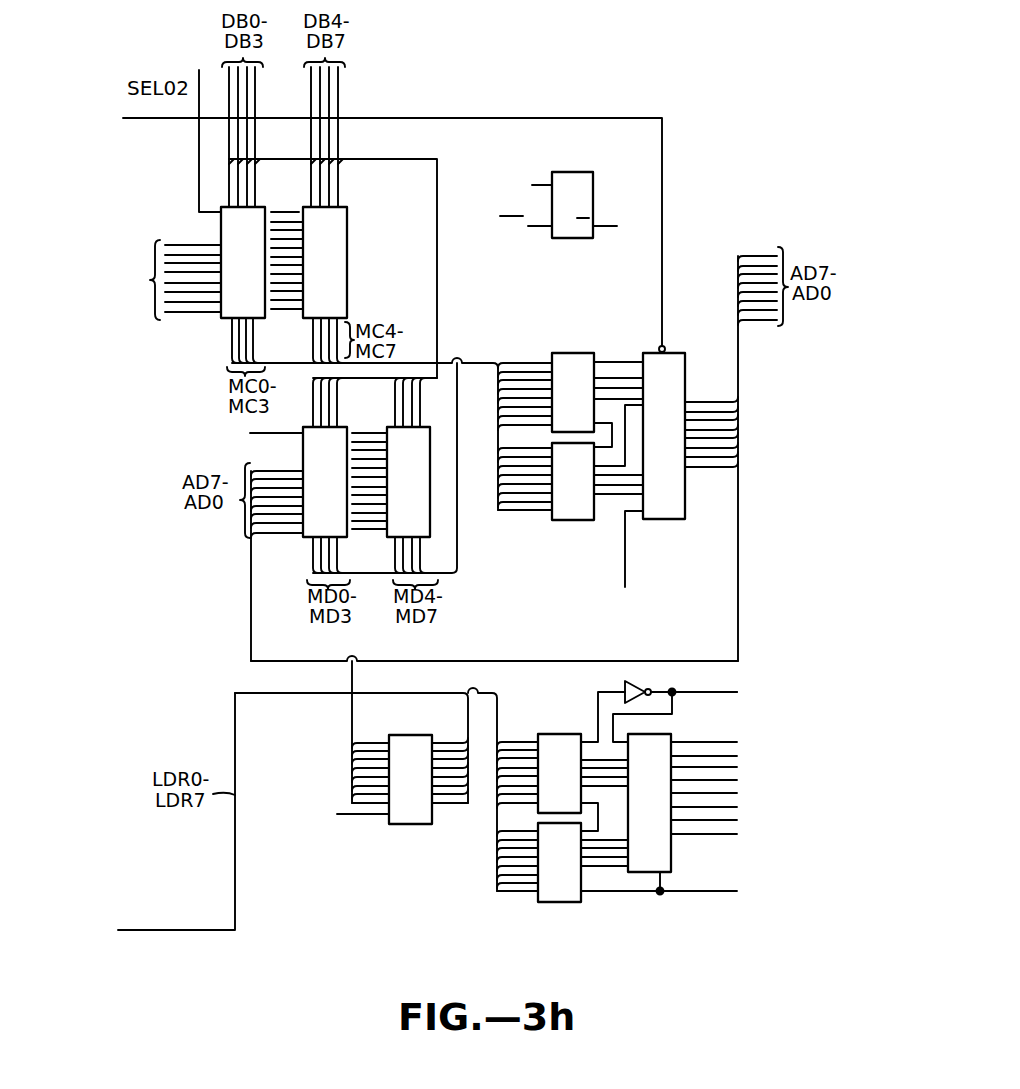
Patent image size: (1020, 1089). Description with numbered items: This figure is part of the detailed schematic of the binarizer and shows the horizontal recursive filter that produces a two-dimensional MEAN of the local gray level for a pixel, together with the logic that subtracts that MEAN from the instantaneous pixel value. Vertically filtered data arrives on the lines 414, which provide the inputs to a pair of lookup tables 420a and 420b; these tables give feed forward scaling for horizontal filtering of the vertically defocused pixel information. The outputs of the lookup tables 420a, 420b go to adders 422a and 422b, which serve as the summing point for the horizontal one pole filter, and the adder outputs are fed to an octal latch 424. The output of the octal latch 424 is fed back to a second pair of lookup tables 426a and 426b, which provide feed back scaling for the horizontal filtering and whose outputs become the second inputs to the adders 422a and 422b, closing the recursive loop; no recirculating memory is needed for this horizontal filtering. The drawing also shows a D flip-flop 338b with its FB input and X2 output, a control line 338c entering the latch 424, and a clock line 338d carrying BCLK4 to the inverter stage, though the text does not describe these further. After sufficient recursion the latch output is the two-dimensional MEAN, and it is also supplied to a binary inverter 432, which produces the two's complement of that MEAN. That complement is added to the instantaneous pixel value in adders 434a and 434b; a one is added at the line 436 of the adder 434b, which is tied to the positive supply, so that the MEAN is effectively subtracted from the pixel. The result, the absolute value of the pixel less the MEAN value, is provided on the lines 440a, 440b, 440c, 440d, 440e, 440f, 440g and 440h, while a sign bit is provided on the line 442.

The lines 414 is at (164, 280).
The lookup table 420a is at (243, 285).
The lookup table 420b is at (309, 285).
The D flip-flop 338b is at (537, 185).
The adder 422a is at (570, 400).
The adder 422b is at (570, 462).
The octal latch 424 is at (690, 432).
The lookup table 426a is at (298, 500).
The lookup table 426b is at (391, 500).
The control line 338c is at (626, 540).
The binary inverter 432 is at (410, 779).
The clock control line BCLK4 338d is at (345, 816).
The adder 434a is at (562, 761).
The adder 434b is at (562, 862).
The line 442 is at (718, 692).
The line 440a is at (728, 742).
The line 440b is at (728, 756).
The line 440c is at (728, 770).
The line 440d is at (757, 783).
The line 440e is at (728, 795).
The line 440f is at (755, 806).
The line 440g is at (728, 822).
The line 440h is at (728, 844).
The line 436 is at (692, 894).